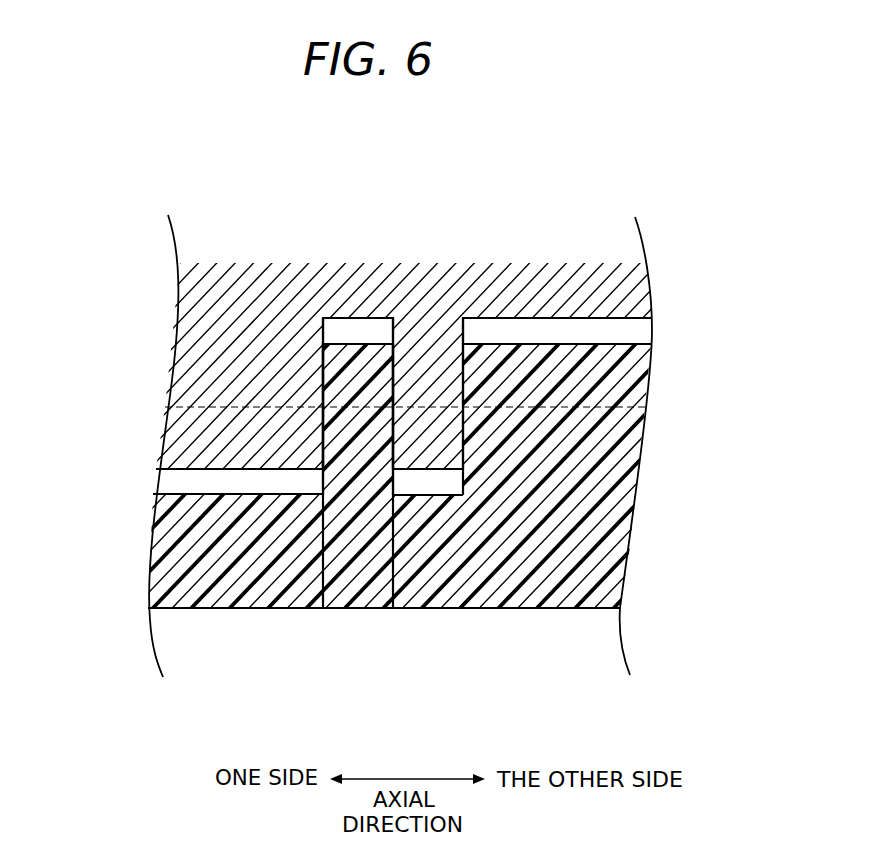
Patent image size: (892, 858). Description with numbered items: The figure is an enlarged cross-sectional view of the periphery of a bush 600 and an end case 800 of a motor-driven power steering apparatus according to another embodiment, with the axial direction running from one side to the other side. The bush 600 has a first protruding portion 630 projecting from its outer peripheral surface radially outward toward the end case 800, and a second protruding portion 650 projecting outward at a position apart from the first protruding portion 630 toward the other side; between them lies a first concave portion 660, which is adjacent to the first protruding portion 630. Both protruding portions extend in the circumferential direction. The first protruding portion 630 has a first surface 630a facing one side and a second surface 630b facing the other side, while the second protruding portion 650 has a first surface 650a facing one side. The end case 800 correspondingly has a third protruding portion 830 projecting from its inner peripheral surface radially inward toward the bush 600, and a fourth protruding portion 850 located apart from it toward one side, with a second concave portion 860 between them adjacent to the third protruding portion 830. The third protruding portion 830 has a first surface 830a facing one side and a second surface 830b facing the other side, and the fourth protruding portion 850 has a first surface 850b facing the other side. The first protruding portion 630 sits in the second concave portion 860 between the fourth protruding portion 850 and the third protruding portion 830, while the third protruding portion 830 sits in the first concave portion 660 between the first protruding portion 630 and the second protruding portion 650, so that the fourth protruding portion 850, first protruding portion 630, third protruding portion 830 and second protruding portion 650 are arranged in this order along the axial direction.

The end case 800 is at (158, 320).
The bush 600 is at (138, 525).
The first protruding portion 630 is at (355, 326).
The first surface 630a is at (323, 377).
The second surface 630b is at (393, 372).
The first concave portion 660 is at (430, 358).
The second protruding portion 650 is at (571, 328).
The first surface 650a is at (463, 362).
The fourth protruding portion 850 is at (236, 482).
The first surface 850b is at (323, 432).
The second concave portion 860 is at (357, 388).
The first surface 830a is at (393, 432).
The third protruding portion 830 is at (443, 485).
The second surface 830b is at (463, 407).